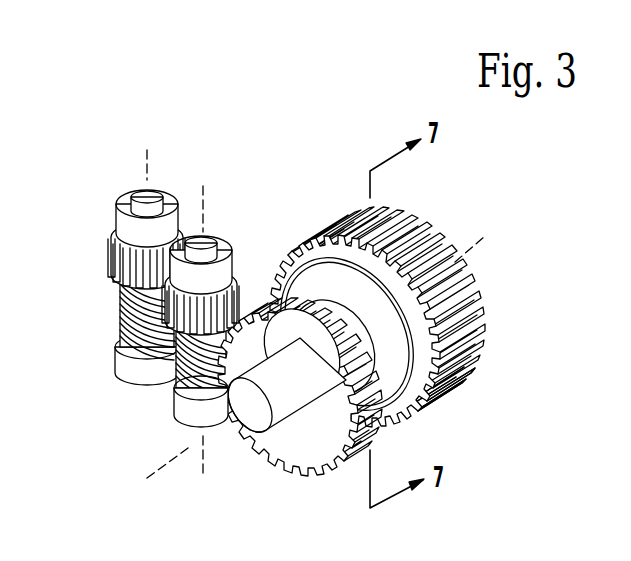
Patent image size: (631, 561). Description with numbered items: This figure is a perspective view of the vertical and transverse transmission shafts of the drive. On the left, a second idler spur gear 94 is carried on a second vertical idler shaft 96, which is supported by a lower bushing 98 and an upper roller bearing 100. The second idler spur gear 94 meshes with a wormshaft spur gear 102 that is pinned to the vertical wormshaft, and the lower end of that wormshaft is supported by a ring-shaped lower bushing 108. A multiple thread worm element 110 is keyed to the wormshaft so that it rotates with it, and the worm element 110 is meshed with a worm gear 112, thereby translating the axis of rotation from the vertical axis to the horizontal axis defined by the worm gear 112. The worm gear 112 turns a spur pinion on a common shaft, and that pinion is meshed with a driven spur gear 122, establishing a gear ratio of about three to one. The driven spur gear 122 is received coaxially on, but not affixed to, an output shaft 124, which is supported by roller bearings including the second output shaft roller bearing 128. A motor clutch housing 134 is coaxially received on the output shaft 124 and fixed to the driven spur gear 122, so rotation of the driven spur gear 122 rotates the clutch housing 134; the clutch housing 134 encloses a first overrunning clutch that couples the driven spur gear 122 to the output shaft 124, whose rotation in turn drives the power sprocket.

The second idler spur gear 94 is at (112, 251).
The second vertical idler shaft 96 is at (112, 303).
The lower bushing 98 is at (117, 358).
The upper roller bearing 100 is at (138, 203).
The wormshaft spur gear 102 is at (249, 264).
The lower bushing 108 is at (190, 413).
The multiple thread worm element 110 is at (187, 397).
The worm gear 112 is at (325, 478).
The driven spur gear 122 is at (388, 322).
The output shaft 124 is at (301, 388).
The second output shaft roller bearing 128 is at (423, 416).
The motor clutch housing 134 is at (461, 368).